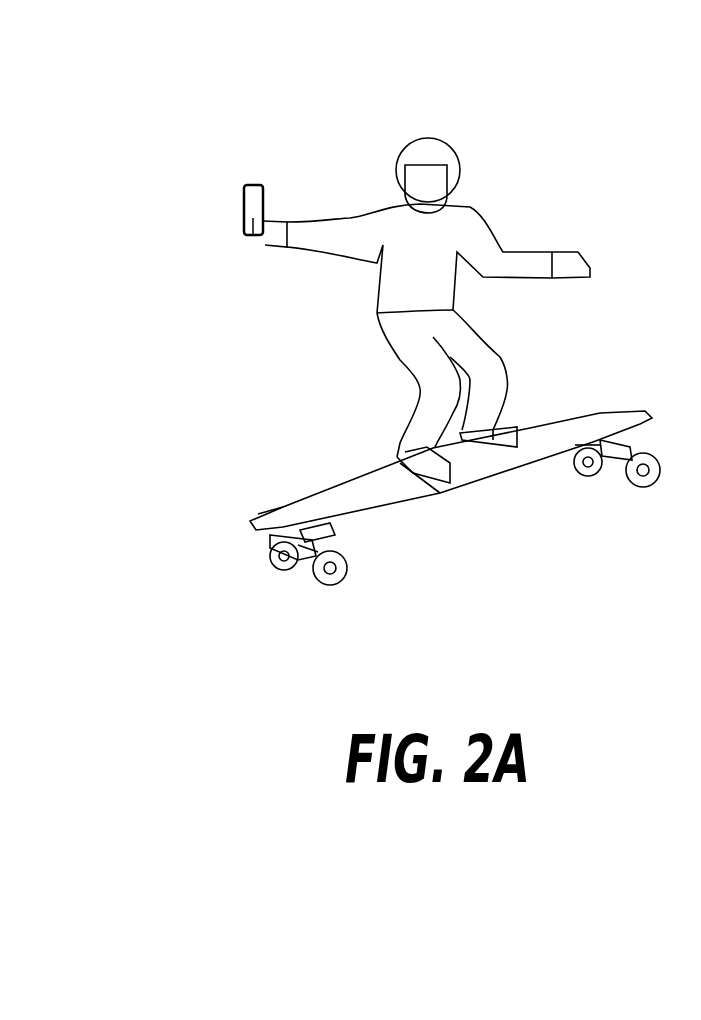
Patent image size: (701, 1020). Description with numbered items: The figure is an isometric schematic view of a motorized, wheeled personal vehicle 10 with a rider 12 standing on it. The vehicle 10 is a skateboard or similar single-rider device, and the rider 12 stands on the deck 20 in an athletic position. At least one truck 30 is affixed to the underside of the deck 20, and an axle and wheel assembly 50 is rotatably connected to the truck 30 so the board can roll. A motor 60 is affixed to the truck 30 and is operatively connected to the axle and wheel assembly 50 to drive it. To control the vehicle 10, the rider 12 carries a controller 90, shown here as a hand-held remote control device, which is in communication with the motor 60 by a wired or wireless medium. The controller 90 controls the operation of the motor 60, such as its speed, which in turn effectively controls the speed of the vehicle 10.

The motorized, wheeled personal vehicle 10 is at (565, 194).
The rider 12 is at (420, 258).
The deck 20 is at (328, 498).
The truck 30 is at (260, 563).
The axle and wheel assembly 50 is at (300, 560).
The motor 60 is at (327, 537).
The controller 90 is at (253, 237).